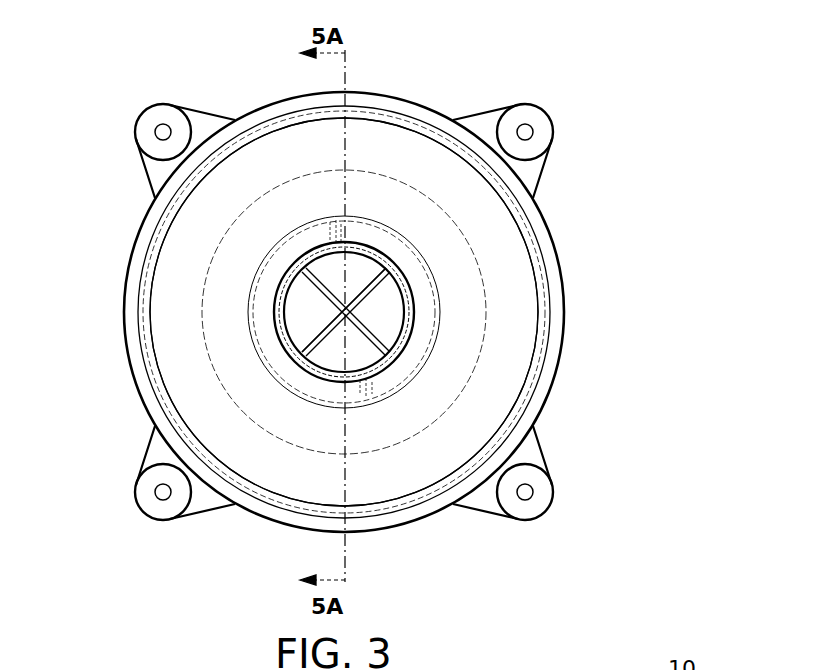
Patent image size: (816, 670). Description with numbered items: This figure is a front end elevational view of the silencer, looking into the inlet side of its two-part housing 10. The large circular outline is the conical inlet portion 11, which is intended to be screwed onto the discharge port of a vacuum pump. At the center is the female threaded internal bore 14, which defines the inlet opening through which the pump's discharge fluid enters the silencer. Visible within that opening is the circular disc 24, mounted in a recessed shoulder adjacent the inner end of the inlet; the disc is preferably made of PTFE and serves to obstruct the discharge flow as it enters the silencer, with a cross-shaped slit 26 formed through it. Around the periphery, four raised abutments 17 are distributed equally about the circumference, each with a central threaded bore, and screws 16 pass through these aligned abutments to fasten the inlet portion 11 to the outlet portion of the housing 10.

The housing 10 is at (586, 363).
The conical inlet portion 11 is at (205, 330).
The female threaded internal bore 14 is at (356, 264).
The screws 16 is at (148, 135).
The raised abutments 17 is at (490, 108).
The circular disc 24 is at (386, 308).
The cross-shaped slit 26 is at (317, 328).